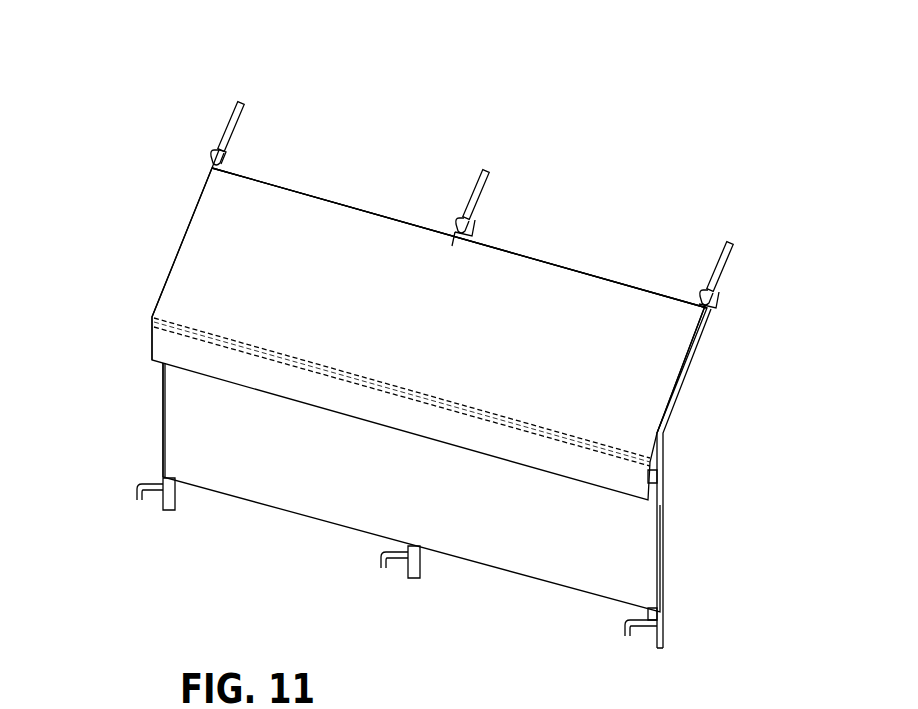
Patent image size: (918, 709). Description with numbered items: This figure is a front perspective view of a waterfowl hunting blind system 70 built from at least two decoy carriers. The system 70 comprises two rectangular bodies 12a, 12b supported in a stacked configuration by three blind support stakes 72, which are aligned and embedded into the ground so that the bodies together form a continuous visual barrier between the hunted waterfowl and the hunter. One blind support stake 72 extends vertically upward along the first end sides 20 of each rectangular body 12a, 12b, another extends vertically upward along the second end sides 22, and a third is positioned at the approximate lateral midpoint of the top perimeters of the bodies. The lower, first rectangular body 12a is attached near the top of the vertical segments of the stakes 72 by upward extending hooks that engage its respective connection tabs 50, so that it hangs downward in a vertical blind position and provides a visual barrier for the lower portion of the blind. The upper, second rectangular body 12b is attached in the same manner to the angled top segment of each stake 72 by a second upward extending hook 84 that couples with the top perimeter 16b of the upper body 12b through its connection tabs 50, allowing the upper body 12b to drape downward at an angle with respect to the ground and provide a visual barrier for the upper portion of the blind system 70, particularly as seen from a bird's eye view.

The first, lower rectangular body 12a is at (163, 425).
The second, upper rectangular body 12b is at (182, 242).
The top perimeter of the second, upper rectangular body 16b is at (320, 193).
The first end side 20 is at (168, 278).
The second end side 22 is at (687, 367).
The connection tab 50 is at (223, 162).
The waterfowl hunting blind system 70 is at (603, 212).
The blind support stake 72 is at (687, 440).
The second upward extending hook 84 is at (215, 135).